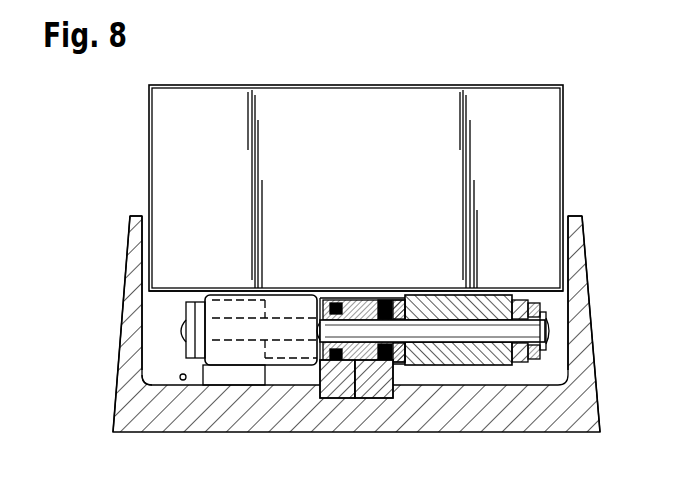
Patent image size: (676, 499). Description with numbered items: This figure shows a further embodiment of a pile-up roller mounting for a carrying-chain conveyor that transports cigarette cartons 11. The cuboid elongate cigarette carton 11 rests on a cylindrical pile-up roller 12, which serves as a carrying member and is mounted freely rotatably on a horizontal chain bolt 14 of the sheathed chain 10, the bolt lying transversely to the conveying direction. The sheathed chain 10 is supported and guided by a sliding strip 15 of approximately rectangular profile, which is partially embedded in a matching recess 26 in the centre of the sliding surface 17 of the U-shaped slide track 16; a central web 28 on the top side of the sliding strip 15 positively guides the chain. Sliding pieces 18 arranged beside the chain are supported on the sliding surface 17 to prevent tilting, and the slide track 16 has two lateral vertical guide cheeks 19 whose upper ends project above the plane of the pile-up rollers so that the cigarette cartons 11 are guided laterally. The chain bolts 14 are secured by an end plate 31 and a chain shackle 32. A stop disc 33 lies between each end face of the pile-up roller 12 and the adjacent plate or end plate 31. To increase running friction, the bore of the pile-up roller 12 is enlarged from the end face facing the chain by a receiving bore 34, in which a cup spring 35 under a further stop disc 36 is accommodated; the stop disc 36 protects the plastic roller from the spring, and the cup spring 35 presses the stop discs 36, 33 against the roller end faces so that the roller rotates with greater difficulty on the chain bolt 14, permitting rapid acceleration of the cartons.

The sheathed chain 10 is at (357, 282).
The cigarette carton 11 is at (431, 105).
The pile-up roller 12 is at (288, 304).
The chain bolt 14 is at (473, 330).
The sliding strip 15 is at (328, 378).
The slide track 16 is at (138, 410).
The sliding surface 17 is at (182, 380).
The sliding piece 18 is at (226, 375).
The guide cheek 19 is at (133, 242).
The recess 26 is at (340, 397).
The central web 28 is at (363, 397).
The end plate 31 is at (530, 360).
The chain shackle 32 is at (533, 314).
The stop disc 33 is at (517, 362).
The receiving bore 34 is at (396, 303).
The cup spring 35 is at (386, 362).
The further stop disc 36 is at (400, 360).